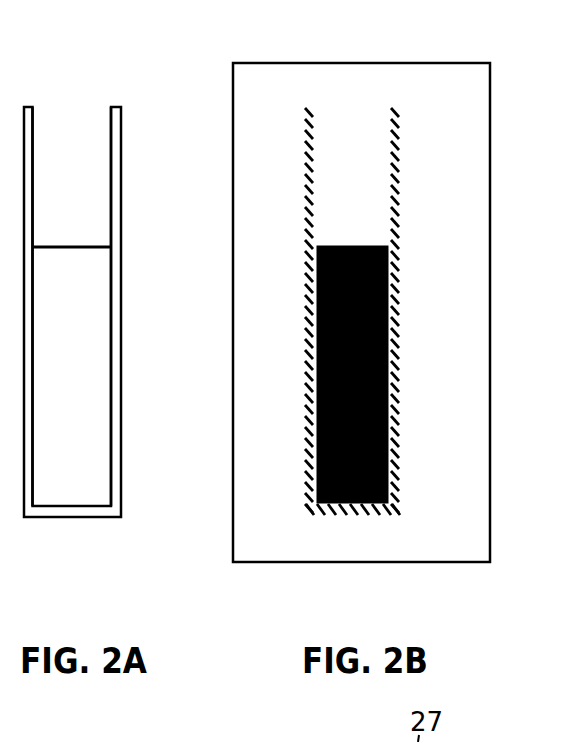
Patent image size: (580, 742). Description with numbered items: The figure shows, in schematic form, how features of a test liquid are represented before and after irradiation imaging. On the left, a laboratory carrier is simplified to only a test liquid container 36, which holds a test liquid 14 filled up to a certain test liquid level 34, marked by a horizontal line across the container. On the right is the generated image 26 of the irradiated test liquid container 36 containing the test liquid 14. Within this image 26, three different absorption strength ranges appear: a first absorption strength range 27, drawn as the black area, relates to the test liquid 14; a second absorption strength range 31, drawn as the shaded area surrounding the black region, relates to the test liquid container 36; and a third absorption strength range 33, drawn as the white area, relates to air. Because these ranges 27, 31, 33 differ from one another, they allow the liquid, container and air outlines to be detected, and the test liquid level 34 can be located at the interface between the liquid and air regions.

In FIG. 2A, the test liquid 14 is at (90, 357).
In FIG. 2A, the test liquid level 34 is at (131, 237).
In FIG. 2A, the test liquid container 36 is at (117, 322).
In FIG. 2B, the generated image 26 is at (490, 93).
In FIG. 2B, the first absorption strength range 27 is at (343, 246).
In FIG. 2B, the second absorption strength range 31 is at (308, 452).
In FIG. 2B, the third absorption strength range 33 is at (452, 475).